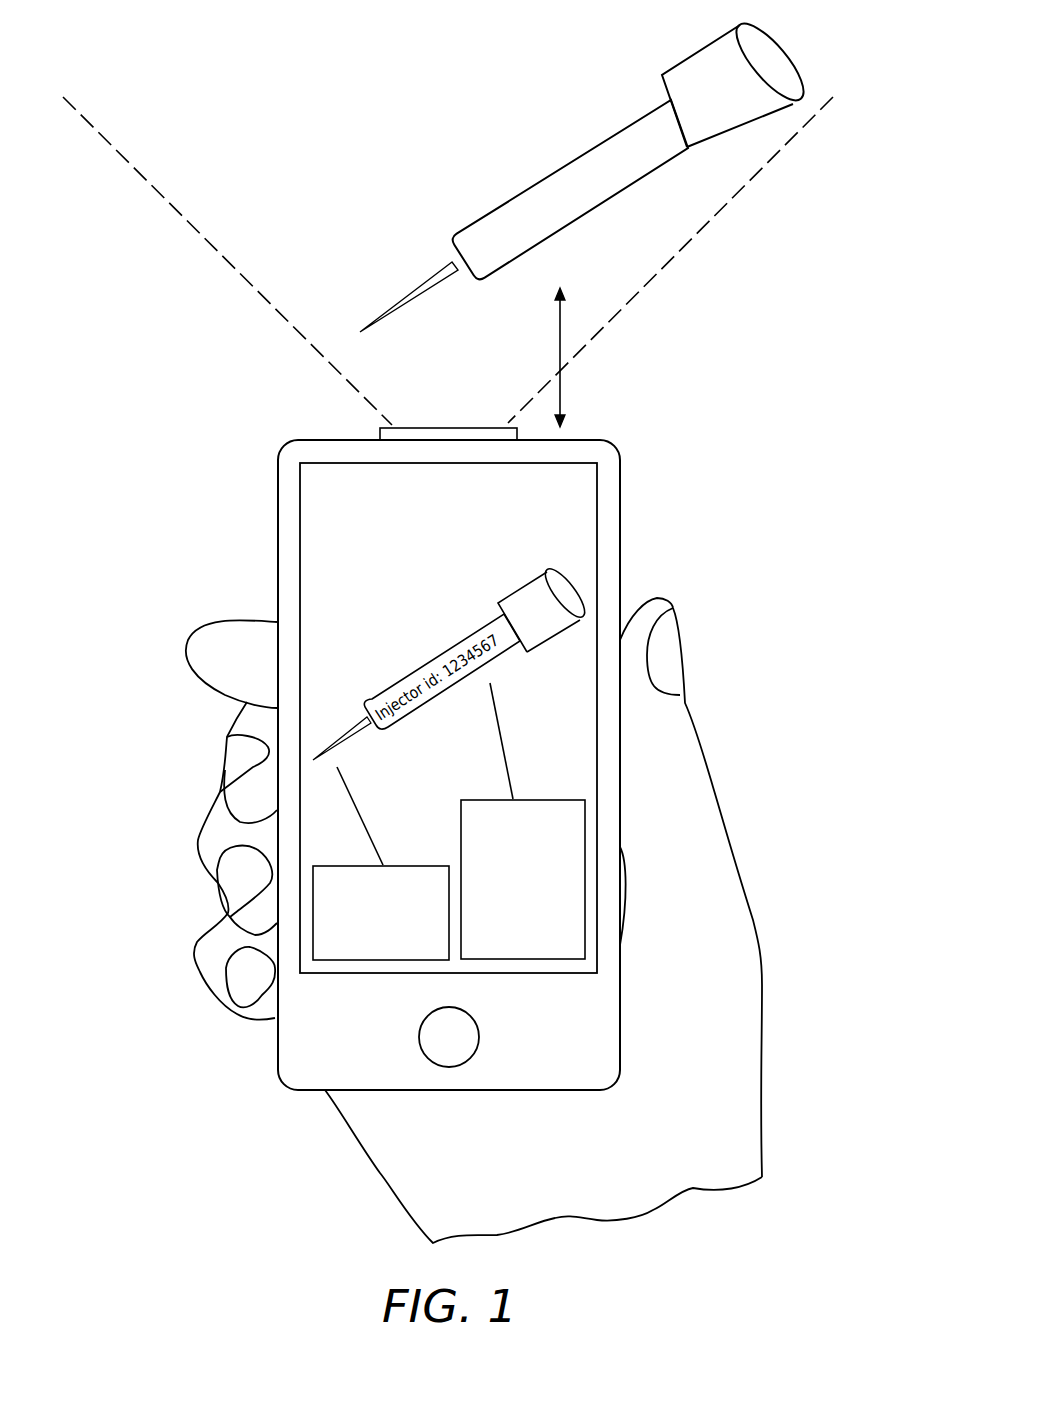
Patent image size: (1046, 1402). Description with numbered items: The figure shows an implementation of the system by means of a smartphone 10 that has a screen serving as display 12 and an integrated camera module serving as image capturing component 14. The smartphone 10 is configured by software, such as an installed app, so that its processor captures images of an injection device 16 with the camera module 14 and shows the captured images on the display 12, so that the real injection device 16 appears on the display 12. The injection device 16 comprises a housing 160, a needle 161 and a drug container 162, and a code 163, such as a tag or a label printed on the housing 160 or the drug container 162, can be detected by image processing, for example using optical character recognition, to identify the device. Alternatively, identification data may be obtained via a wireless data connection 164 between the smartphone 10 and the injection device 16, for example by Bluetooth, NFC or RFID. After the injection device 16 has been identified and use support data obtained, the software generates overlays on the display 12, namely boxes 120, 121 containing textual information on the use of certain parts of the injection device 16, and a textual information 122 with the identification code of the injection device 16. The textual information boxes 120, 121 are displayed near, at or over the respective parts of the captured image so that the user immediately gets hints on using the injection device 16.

The smartphone 10 is at (252, 474).
The display 12 is at (325, 535).
The image capturing component 14 is at (447, 428).
The injection device 16 is at (587, 172).
The housing 160 is at (570, 162).
The needle 161 is at (402, 295).
The drug container 162 is at (692, 63).
The code 163 is at (617, 187).
The wireless data connection 164 is at (563, 384).
The textual information box 120 is at (417, 866).
The textual information box 121 is at (553, 800).
The textual information 122 is at (557, 487).